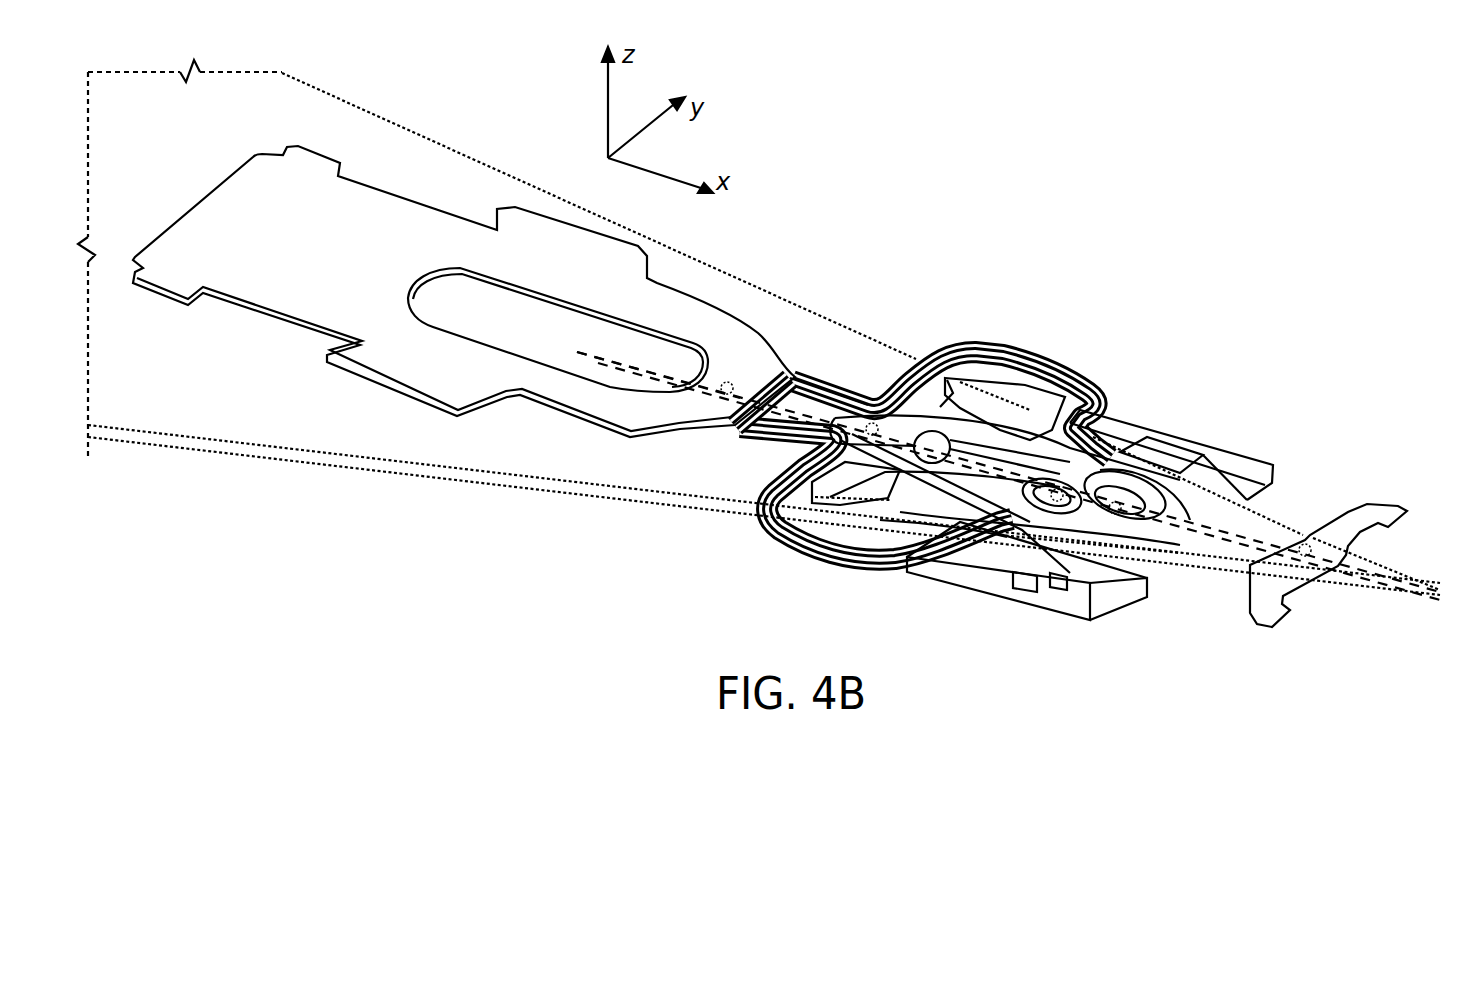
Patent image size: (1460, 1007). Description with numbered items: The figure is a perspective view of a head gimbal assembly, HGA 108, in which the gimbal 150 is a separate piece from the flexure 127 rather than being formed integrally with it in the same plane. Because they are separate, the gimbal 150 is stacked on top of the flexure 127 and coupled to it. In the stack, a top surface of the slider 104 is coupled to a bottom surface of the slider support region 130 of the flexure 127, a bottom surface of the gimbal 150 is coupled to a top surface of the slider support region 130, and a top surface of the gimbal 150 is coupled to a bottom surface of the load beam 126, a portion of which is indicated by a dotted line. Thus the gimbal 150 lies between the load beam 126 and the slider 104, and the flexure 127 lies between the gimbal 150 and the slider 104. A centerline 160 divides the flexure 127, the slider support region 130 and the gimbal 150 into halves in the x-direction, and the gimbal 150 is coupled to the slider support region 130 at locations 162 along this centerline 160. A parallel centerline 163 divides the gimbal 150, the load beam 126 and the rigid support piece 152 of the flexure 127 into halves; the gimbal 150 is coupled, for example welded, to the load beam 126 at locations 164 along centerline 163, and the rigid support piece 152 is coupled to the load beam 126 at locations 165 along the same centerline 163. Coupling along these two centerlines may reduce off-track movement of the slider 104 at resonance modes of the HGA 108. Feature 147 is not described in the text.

The slider 104 is at (1073, 600).
The HGA 108 is at (1017, 167).
The load beam 126 is at (827, 347).
The flexure 127 is at (719, 445).
The slider support region 130 is at (1117, 413).
The service loop 147 is at (997, 350).
The gimbal 150 is at (1260, 583).
The rigid support piece 152 is at (437, 377).
The centerline 160 is at (575, 357).
The locations 162 is at (1023, 517).
The centerline 163 is at (593, 352).
The locations 164 is at (873, 422).
The locations 165 is at (727, 382).